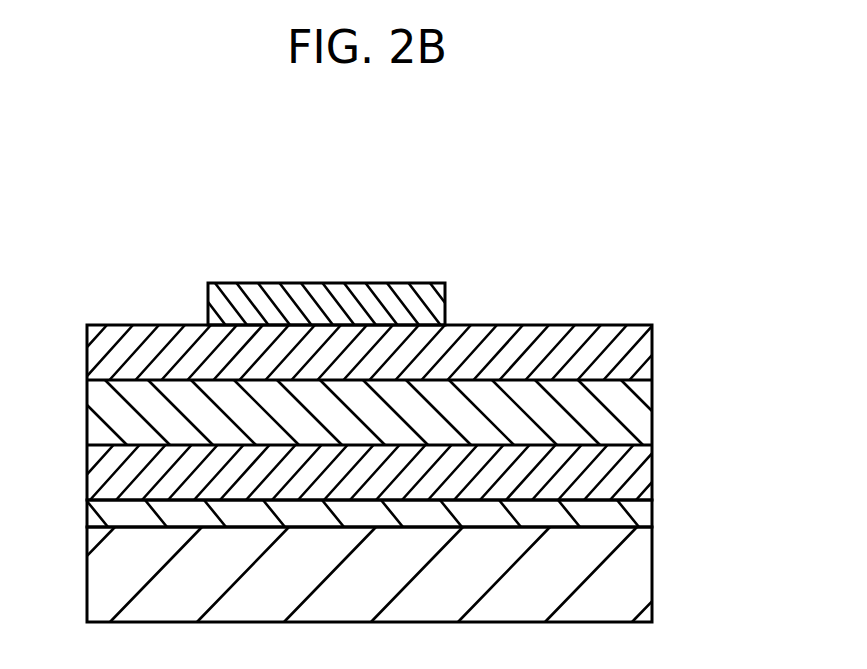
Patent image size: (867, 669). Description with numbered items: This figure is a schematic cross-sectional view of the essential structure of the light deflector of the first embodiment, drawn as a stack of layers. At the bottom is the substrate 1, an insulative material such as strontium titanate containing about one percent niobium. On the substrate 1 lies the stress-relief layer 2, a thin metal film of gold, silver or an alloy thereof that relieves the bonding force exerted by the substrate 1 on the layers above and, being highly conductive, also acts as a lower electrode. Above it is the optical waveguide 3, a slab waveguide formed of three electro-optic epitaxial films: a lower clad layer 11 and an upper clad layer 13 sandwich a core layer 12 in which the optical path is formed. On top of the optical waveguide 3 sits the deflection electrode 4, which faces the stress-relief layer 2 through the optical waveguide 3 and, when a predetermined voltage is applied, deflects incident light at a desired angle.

The substrate 1 is at (630, 578).
The stress-relief layer 2 is at (635, 515).
The optical waveguide 3 is at (370, 324).
The deflection electrode 4 is at (330, 303).
The lower clad layer 11 is at (578, 465).
The core layer 12 is at (532, 415).
The upper clad layer 13 is at (477, 353).